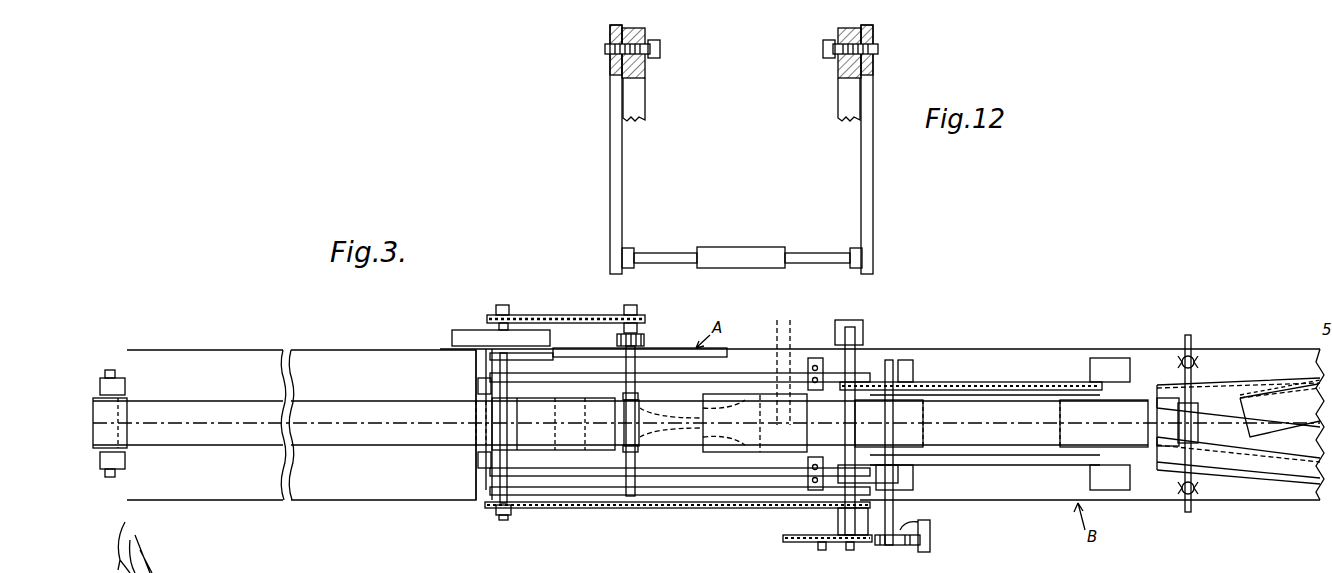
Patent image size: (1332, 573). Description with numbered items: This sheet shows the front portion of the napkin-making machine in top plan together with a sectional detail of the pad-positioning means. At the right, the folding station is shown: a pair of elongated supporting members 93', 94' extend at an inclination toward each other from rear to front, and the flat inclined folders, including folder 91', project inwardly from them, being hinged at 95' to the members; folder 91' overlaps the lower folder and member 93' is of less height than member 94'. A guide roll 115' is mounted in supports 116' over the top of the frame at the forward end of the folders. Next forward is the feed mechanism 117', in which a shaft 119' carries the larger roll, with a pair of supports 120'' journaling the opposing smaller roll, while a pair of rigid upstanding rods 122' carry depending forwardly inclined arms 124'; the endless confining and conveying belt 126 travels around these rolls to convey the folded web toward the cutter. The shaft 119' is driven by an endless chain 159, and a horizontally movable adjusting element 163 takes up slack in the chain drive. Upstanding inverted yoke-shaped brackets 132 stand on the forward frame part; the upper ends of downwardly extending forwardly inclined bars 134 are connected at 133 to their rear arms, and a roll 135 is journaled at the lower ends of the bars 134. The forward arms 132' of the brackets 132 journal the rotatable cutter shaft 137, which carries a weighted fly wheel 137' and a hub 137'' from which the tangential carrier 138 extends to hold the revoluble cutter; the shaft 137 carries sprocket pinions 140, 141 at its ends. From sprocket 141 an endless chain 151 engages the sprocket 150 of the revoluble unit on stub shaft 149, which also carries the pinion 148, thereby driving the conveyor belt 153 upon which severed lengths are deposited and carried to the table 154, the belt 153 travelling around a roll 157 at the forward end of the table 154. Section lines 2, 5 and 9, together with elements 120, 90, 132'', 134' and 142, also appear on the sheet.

In FIG. 12, the connection 133 is at (660, 47).
In FIG. 12, the inverted yoke-shaped bracket 132 is at (741, 74).
In FIG. 12, the forwardly inclined bar 134 is at (741, 149).
In FIG. 3, the forwardly inclined bar 134 is at (640, 341).
In FIG. 12, the roll 135 is at (736, 251).
In FIG. 3, the section line 5 is at (93, 425).
In FIG. 3, the section line 2 is at (1283, 525).
In FIG. 3, the section line 9 is at (1287, 517).
In FIG. 3, the roll 157 is at (112, 380).
In FIG. 3, the conveyor belt 153 is at (299, 412).
In FIG. 3, the table 154 is at (345, 360).
In FIG. 3, the fly wheel 137' is at (494, 324).
In FIG. 3, the hub 137'' is at (453, 424).
In FIG. 3, the cutter shaft 137 is at (680, 375).
In FIG. 3, the sprocket pinion 141 is at (498, 306).
In FIG. 3, the forward arm 132' is at (538, 388).
In FIG. 3, the lower bar 132'' is at (657, 502).
In FIG. 3, the endless chain 151 is at (575, 317).
In FIG. 3, the stub shaft 149 is at (633, 306).
In FIG. 3, the sprocket 150 is at (640, 330).
In FIG. 3, the pinion 148 is at (644, 341).
In FIG. 3, the lower plate 134' is at (677, 520).
In FIG. 3, the carrier 138 is at (576, 440).
In FIG. 3, the sprocket pinion 140 is at (505, 515).
In FIG. 3, the depending forwardly inclined arm 124' is at (755, 434).
In FIG. 3, the plate 142 is at (795, 336).
In FIG. 3, the rigid upstanding rod 122' is at (838, 419).
In FIG. 3, the endless confining and conveying belt 126 is at (890, 360).
In FIG. 3, the support 120'' is at (928, 405).
In FIG. 3, the endless chain 159 is at (1030, 382).
In FIG. 3, the feed mechanism 117' is at (946, 383).
In FIG. 3, the bracket 120 is at (1104, 408).
In FIG. 3, the adjusting element 163 is at (915, 522).
In FIG. 3, the support 116' is at (1211, 410).
In FIG. 3, the guide roll 115' is at (1215, 400).
In FIG. 3, the shaft 119' is at (1152, 371).
In FIG. 3, the supporting member 94' is at (1238, 402).
In FIG. 3, the folder 91' is at (1280, 410).
In FIG. 3, the wedge 90 is at (1238, 456).
In FIG. 3, the supporting member 93' is at (1238, 499).
In FIG. 3, the hinge 95' is at (1281, 419).